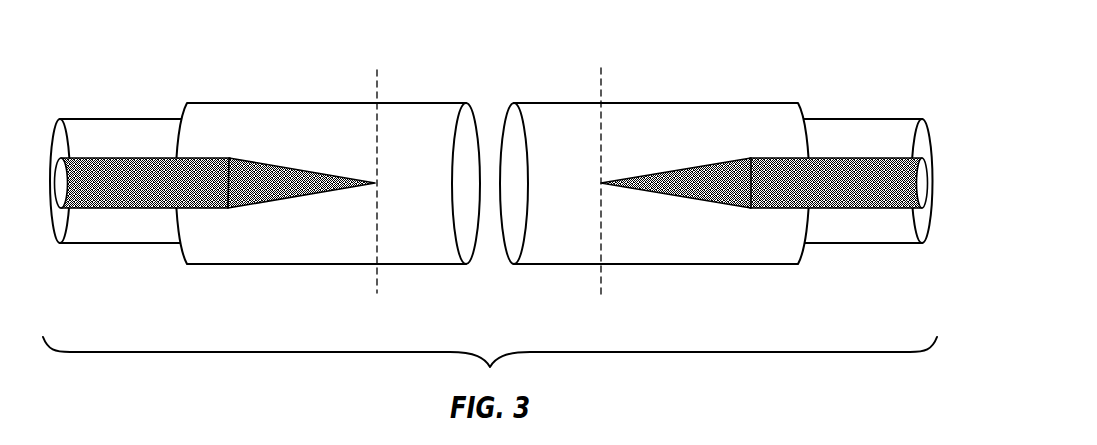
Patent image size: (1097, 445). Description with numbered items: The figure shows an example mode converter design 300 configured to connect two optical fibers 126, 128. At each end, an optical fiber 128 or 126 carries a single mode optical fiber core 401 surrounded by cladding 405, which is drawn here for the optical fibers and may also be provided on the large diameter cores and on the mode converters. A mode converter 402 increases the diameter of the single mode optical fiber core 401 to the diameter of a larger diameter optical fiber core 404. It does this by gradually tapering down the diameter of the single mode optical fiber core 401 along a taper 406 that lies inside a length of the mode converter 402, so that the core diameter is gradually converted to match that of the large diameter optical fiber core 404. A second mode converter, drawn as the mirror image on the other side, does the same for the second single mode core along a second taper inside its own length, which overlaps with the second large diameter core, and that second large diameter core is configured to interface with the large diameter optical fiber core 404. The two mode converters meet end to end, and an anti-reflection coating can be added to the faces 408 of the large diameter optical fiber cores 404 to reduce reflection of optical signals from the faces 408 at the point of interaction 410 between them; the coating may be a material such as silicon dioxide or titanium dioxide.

The mode converter design 300 is at (835, 40).
The optical fiber 128 is at (87, 118).
The optical fiber 126 is at (895, 119).
The cladding 405 is at (113, 147).
The single mode optical fiber core 401 is at (123, 209).
The mode converter 402 is at (327, 265).
The larger diameter optical fiber core 404 is at (453, 265).
The taper 406 is at (302, 168).
The face 408 is at (463, 143).
The point of interaction 410 is at (490, 118).